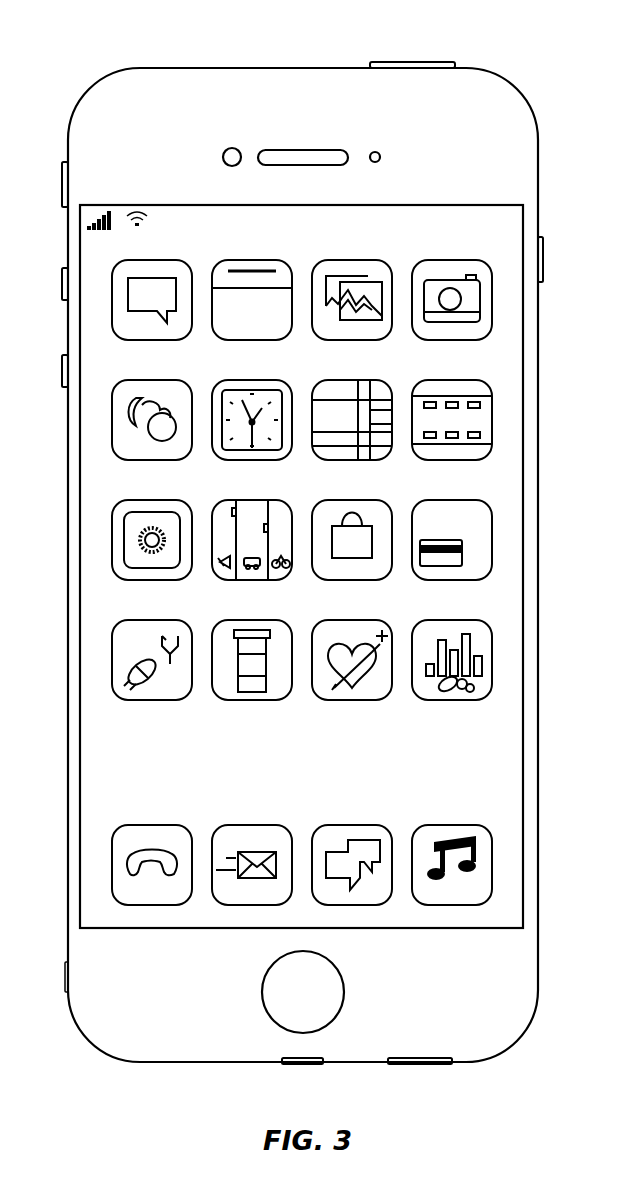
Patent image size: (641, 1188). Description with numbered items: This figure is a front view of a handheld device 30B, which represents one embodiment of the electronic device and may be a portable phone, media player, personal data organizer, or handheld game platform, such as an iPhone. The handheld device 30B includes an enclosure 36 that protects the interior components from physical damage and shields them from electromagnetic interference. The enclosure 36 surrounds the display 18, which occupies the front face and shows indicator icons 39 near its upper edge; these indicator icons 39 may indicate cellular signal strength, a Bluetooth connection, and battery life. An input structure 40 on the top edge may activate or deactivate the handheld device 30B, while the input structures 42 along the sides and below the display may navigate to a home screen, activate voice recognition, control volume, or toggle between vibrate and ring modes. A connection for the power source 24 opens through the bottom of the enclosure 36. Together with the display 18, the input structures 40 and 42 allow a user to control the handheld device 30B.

The handheld device 30B is at (74, 64).
The enclosure 36 is at (540, 157).
The input structure 40 is at (410, 62).
The input structures 42 is at (62, 183).
The power source 24 is at (304, 1065).
The display 18 is at (523, 594).
The indicator icons 39 is at (137, 212).